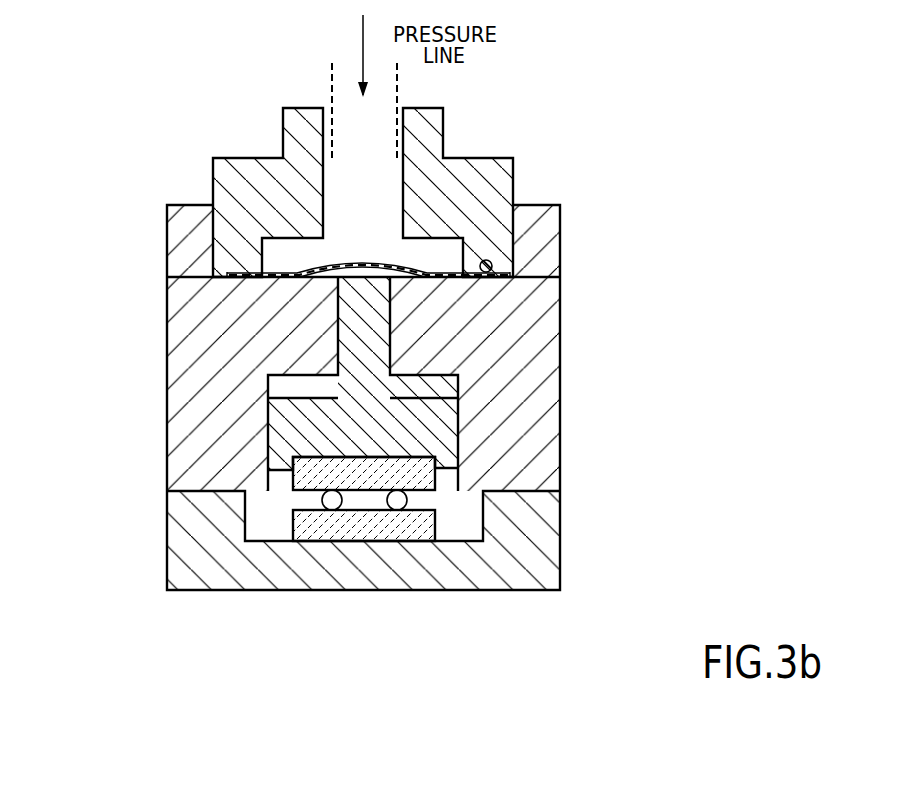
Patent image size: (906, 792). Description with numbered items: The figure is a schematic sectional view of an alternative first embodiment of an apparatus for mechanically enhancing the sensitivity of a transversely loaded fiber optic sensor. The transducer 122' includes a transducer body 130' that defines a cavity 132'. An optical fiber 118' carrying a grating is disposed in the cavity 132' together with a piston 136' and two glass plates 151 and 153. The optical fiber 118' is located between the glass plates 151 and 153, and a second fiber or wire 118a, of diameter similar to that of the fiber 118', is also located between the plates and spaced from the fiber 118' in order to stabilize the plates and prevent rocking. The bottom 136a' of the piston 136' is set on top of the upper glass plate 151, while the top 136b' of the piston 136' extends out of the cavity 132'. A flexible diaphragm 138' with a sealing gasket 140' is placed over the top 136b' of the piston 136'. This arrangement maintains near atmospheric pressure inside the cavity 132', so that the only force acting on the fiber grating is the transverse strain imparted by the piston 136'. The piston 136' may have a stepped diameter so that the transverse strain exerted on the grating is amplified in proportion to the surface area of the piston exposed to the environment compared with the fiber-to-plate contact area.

The transducer 122' is at (358, 370).
The transducer body 130' is at (398, 192).
The cavity 132' is at (397, 433).
The piston 136' is at (366, 373).
The bottom of piston 136a' is at (454, 433).
The top of piston 136b' is at (241, 320).
The flexible diaphragm 138' is at (368, 245).
The sealing gasket 140' is at (555, 276).
The glass plate 151 is at (435, 482).
The glass plate 153 is at (373, 523).
The optical fiber 118' is at (370, 569).
The second fiber or wire 118a is at (405, 506).